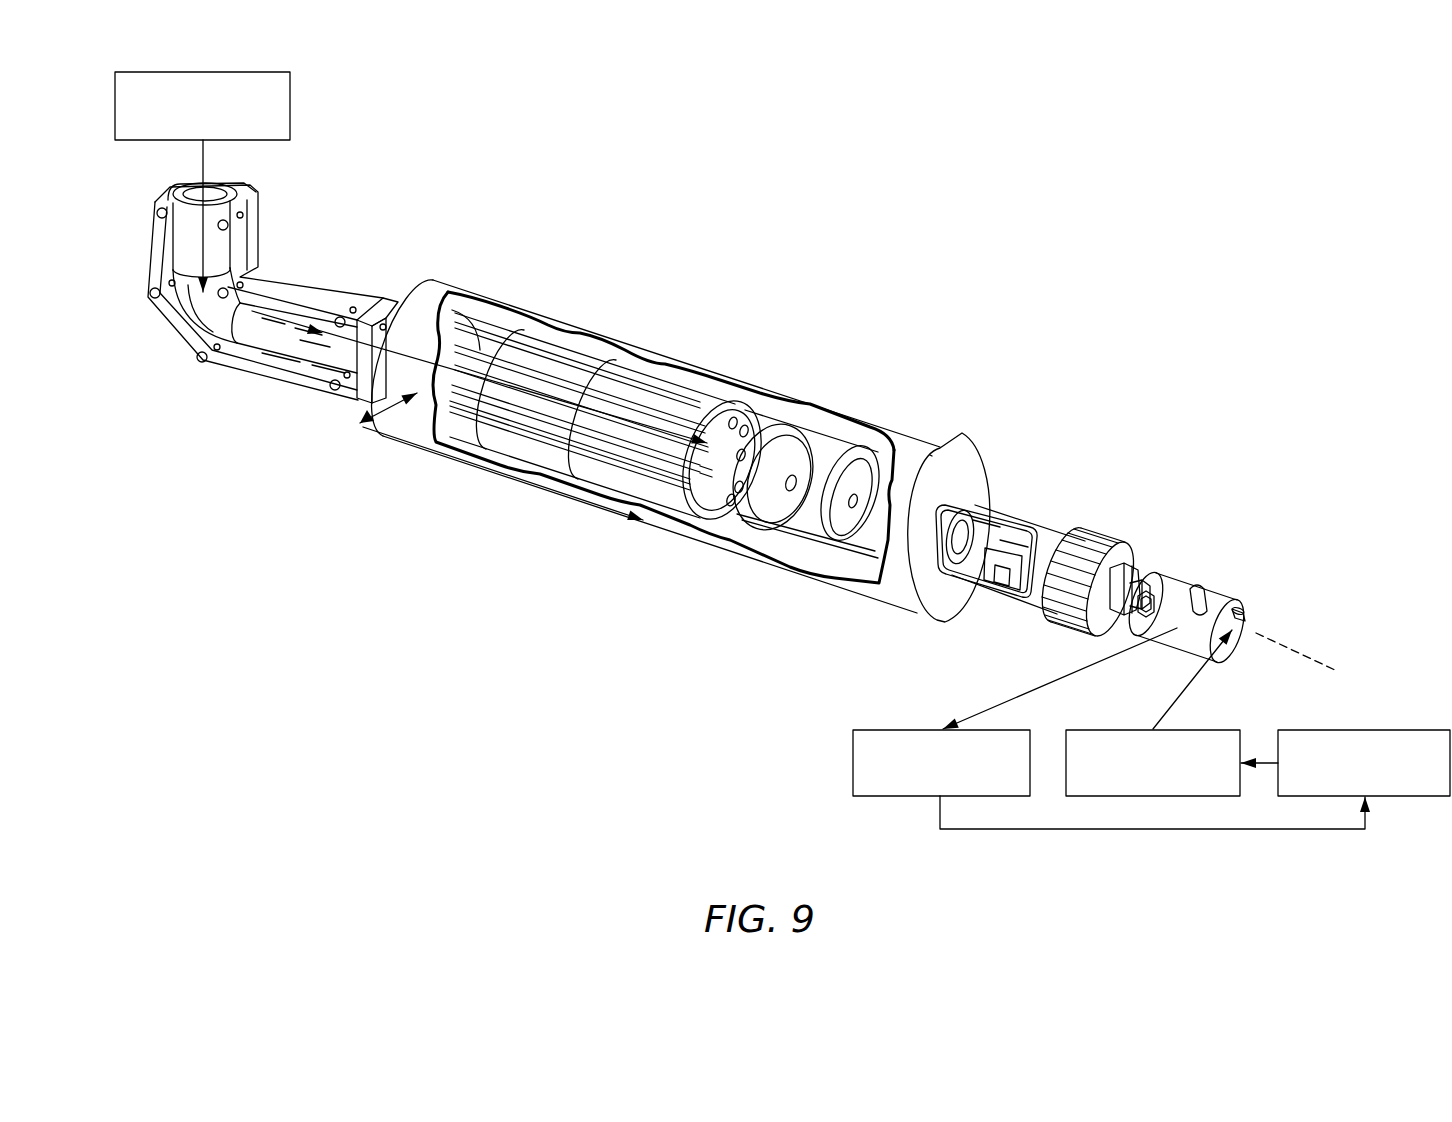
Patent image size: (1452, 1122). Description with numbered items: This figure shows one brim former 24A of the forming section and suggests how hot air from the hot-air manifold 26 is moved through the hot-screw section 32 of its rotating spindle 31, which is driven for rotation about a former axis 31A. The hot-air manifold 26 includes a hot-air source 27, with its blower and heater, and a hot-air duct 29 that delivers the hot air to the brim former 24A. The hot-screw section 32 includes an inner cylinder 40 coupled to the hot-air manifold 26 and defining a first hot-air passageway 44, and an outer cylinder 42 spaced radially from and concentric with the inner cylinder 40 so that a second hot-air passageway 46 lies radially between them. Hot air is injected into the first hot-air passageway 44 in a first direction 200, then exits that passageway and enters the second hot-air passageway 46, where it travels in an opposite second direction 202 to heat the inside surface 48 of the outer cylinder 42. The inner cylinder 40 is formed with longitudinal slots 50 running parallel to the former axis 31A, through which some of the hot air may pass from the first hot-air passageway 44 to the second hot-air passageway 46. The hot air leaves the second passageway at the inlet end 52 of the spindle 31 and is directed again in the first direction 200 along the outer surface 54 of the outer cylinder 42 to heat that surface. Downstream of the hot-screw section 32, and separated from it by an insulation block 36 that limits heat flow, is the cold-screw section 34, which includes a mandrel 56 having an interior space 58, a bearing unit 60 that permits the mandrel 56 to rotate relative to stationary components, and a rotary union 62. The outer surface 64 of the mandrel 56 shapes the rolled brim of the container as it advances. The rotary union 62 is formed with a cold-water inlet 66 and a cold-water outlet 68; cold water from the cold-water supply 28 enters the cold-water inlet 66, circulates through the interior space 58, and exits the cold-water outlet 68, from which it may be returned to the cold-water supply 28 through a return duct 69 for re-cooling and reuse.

The hot-air source 27 is at (290, 106).
The hot-air duct 29 is at (138, 243).
The hot-air manifold 26 is at (272, 259).
The first direction 200 is at (438, 280).
The hot-screw section 32 is at (565, 318).
The rotating spindle 31 is at (843, 572).
The outer surface 54 is at (394, 427).
The brim former 24A is at (788, 390).
The inlet end 52 is at (454, 272).
The second direction 202 is at (470, 417).
The longitudinal slots 50 is at (484, 360).
The inside surface 48 is at (524, 463).
The second hot-air passageway 46 is at (623, 480).
The inner cylinder 40 is at (648, 392).
The insulation block 36 is at (707, 512).
The outer cylinder 42 is at (715, 365).
The first hot-air passageway 44 is at (714, 428).
The interior space 58 is at (851, 450).
The cold-screw section 34 is at (914, 430).
The outer surface 64 is at (930, 456).
The mandrel 56 is at (984, 481).
The bearing unit 60 is at (1056, 516).
The rotary union 62 is at (1216, 580).
The former axis 31A is at (1300, 650).
The cold-water outlet 68 is at (893, 729).
The cold-water inlet 66 is at (1105, 729).
The cold-water supply 28 is at (1365, 729).
The return duct 69 is at (1152, 829).